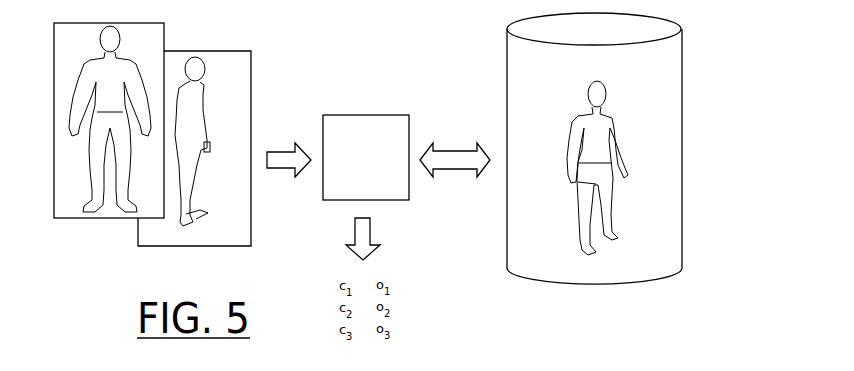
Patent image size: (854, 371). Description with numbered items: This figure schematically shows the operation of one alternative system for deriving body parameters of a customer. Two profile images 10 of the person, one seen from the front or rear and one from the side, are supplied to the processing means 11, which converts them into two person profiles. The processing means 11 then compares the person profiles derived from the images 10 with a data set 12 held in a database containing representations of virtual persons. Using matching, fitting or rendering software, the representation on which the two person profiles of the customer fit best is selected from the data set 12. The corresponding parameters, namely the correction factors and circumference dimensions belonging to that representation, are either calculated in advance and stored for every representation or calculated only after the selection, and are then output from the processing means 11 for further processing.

The profile images 10 is at (134, 208).
The processing means 11 is at (397, 177).
The data set 12 is at (517, 237).